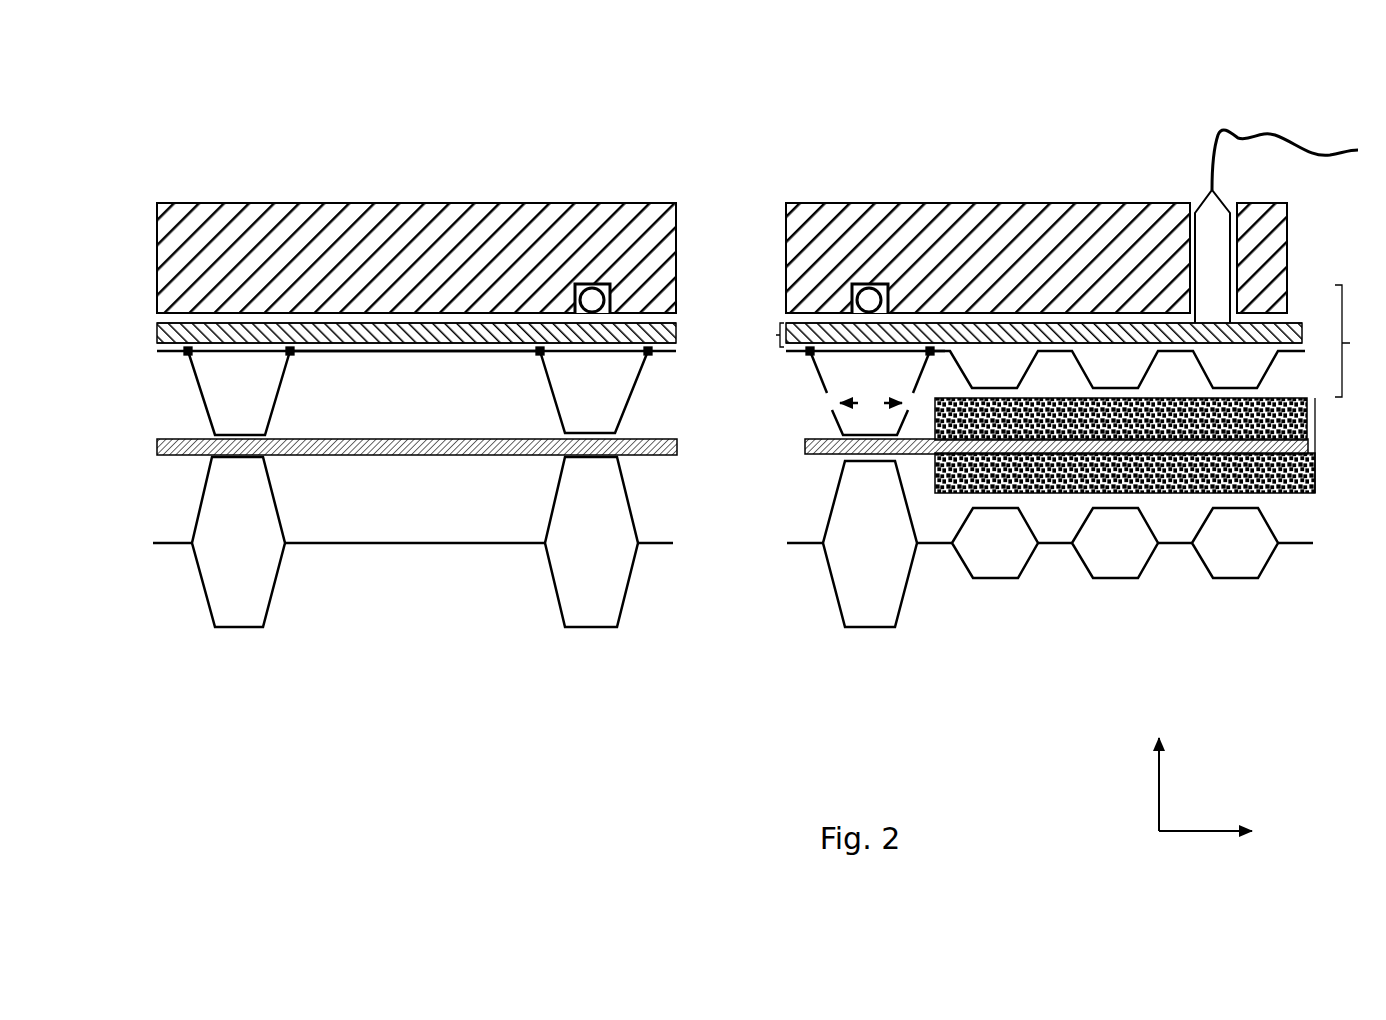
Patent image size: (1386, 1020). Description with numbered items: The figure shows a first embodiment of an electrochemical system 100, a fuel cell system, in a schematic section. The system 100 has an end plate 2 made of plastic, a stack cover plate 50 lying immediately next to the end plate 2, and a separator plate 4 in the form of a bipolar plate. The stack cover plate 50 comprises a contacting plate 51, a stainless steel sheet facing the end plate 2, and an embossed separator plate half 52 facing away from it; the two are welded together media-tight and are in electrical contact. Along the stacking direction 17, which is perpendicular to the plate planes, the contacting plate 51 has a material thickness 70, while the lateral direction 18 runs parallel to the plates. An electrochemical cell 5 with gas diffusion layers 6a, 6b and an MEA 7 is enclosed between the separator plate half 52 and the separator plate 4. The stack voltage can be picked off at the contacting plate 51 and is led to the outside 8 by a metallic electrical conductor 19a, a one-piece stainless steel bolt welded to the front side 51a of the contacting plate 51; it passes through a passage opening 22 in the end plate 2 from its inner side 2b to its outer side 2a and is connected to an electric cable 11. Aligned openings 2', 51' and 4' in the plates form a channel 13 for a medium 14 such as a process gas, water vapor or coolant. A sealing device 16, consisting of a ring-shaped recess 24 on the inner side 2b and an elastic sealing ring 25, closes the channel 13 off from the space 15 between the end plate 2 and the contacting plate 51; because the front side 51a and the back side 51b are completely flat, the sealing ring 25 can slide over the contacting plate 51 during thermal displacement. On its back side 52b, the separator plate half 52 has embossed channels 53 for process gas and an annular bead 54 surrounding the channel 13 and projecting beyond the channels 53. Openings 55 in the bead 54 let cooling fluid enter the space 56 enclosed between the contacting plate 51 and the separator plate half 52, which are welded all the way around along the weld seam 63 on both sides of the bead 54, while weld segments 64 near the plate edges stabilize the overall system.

The end plate 2 is at (722, 225).
The outer side of the end plate 2a is at (337, 204).
The inner side of the end plate 2b is at (452, 316).
The opening in the end plate 2' is at (766, 191).
The separator plate 4 is at (733, 544).
The opening in the separator plate 4' is at (840, 581).
The electrochemical cell 5 is at (1324, 505).
The gas diffusion layer 6a is at (1300, 430).
The gas diffusion layer 6b is at (1305, 488).
The MEA 7 is at (1305, 450).
The outside of the system 8 is at (998, 118).
The electric cable 11 is at (1240, 138).
The channel 13 is at (707, 203).
The medium 14 is at (730, 290).
The space between the end plate and the contacting plate 15 is at (500, 316).
The sealing device 16 is at (604, 316).
The stacking direction 17 is at (1160, 795).
The lateral direction 18 is at (1212, 832).
The electrical conductor 19a is at (1235, 206).
The passage opening 22 is at (1204, 182).
The recess 24 is at (600, 283).
The sealing ring 25 is at (585, 316).
The stack cover plate 50 is at (1357, 341).
The contacting plate 51 is at (718, 315).
The front side of the contacting plate 51a is at (187, 323).
The back side of the contacting plate 51b is at (218, 351).
The opening in the contacting plate 51' is at (703, 308).
The separator plate half 52 is at (169, 353).
The back side of the separator plate half 52b is at (352, 353).
The channels 53 is at (1047, 383).
The annular bead 54 is at (630, 404).
The openings in the bead 55 is at (871, 403).
The space 56 is at (558, 374).
The weld seam 63 is at (540, 353).
The weld segments 64 is at (187, 353).
The material thickness 70 is at (764, 334).
The electrochemical system 100 is at (462, 745).